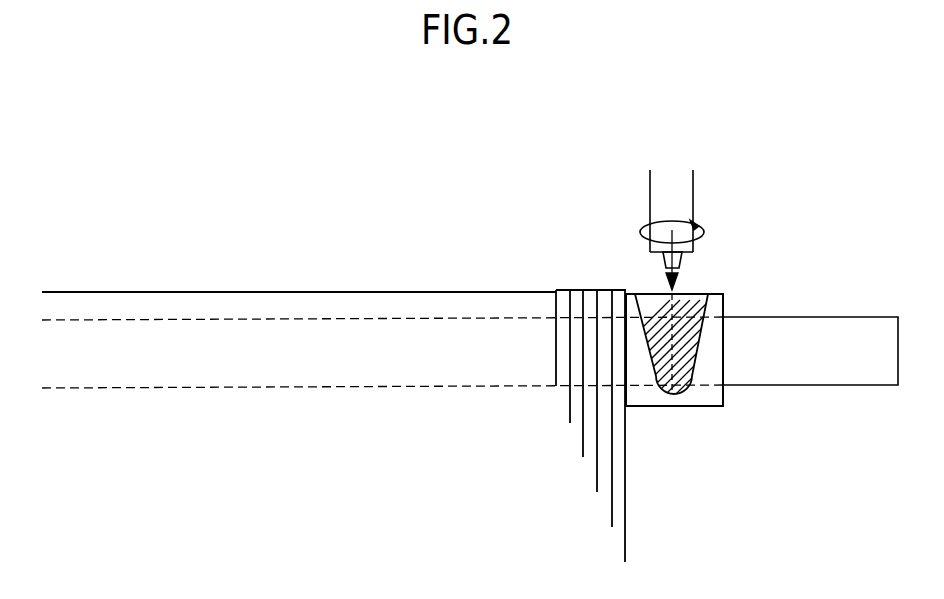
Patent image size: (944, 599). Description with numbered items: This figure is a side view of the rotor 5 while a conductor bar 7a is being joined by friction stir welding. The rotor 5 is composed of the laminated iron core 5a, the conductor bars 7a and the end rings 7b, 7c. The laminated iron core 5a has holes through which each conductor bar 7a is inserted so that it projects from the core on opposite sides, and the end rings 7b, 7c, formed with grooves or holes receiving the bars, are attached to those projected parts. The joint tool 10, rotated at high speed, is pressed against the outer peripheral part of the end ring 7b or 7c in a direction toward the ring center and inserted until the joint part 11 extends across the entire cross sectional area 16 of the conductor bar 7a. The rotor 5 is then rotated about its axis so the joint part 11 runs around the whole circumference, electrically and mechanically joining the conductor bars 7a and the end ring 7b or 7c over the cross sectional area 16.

The rotor 5 is at (337, 291).
The laminated iron core 5a is at (568, 290).
The conductor bar 7a is at (833, 322).
The end ring 7b is at (700, 397).
The end ring 7c is at (674, 350).
The joint tool 10 is at (694, 185).
The joint part 11 is at (698, 294).
The entire cross sectional area 16 is at (677, 345).